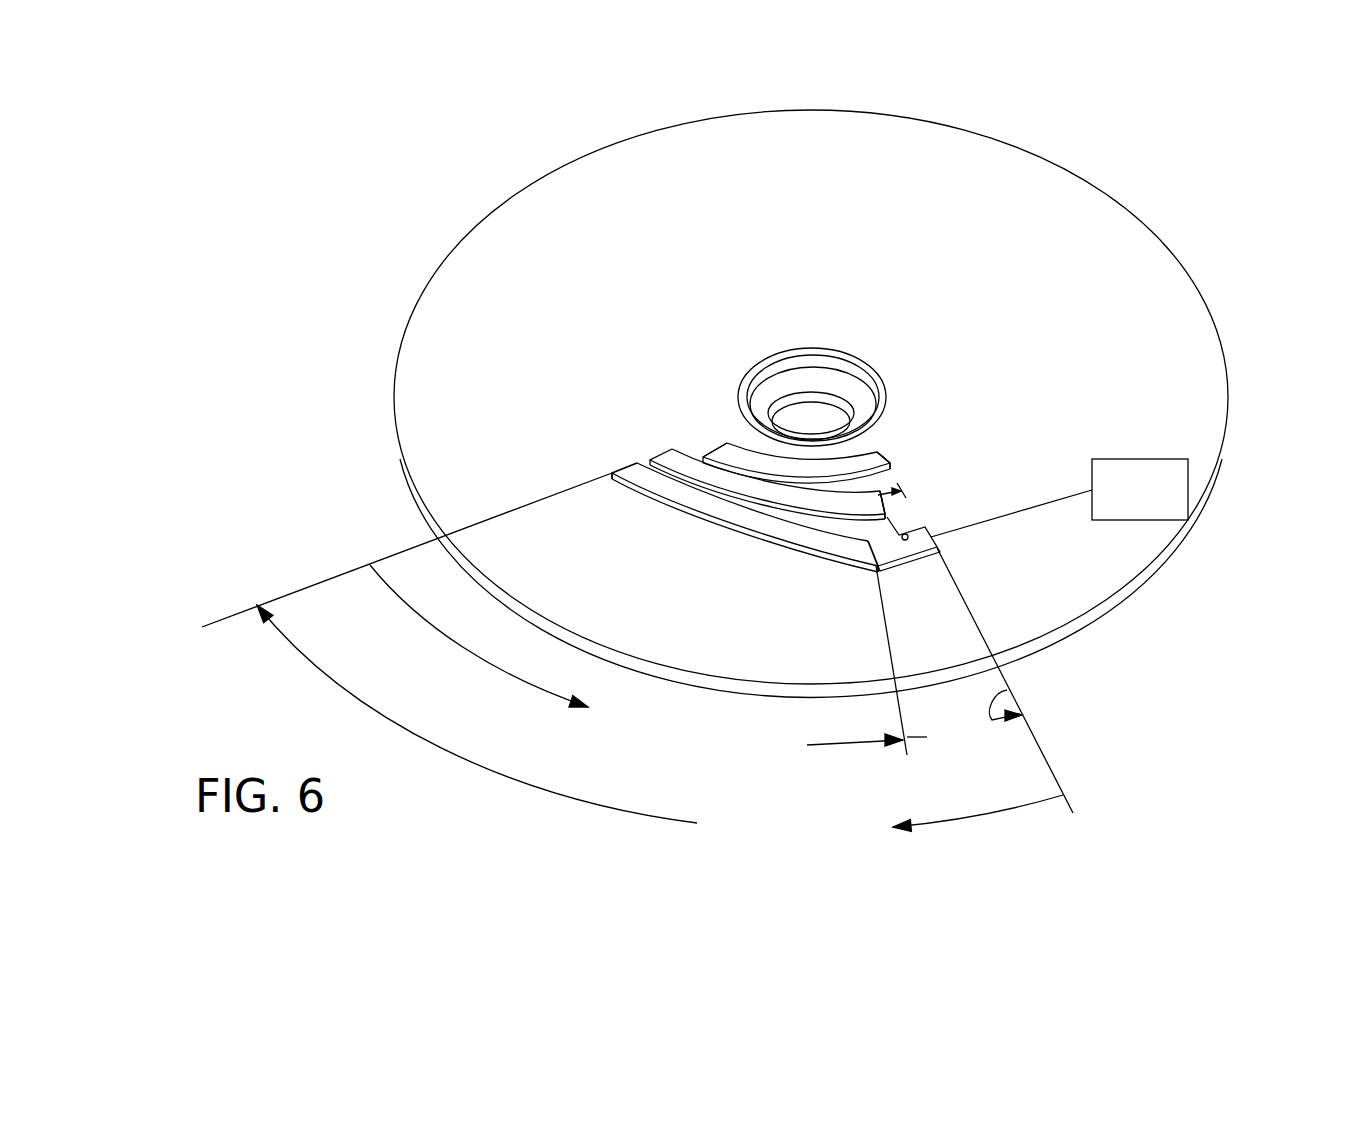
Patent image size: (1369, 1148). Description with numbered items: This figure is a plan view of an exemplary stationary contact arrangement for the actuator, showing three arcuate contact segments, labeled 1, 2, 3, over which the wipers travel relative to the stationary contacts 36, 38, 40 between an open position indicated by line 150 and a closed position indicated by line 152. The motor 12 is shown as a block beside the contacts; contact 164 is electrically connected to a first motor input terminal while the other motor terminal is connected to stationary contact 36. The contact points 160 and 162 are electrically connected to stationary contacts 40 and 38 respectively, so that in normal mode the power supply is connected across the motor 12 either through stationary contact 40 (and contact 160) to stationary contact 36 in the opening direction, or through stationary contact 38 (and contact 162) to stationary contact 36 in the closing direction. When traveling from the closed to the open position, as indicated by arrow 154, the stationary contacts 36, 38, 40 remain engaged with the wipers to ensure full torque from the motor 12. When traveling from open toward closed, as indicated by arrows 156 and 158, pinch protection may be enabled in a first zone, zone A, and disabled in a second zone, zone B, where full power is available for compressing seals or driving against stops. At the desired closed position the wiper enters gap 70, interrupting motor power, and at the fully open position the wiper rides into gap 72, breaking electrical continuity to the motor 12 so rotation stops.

The first ring segment 1 is at (714, 447).
The second ring segment 2 is at (767, 473).
The third ring segment 3 is at (745, 507).
The motor 12 is at (1140, 520).
The stationary contact 36 is at (942, 540).
The stationary contact 38 is at (890, 516).
The stationary contact 40 is at (885, 453).
The gap 70 is at (900, 489).
The gap 72 is at (727, 440).
The line 150 is at (302, 588).
The line 152 is at (1047, 755).
The arrow 154 is at (560, 795).
The arrow 156 is at (440, 633).
The arrow 158 is at (1007, 690).
The contact point 160 is at (890, 465).
The contact point 162 is at (887, 514).
The contact 164 is at (1188, 487).